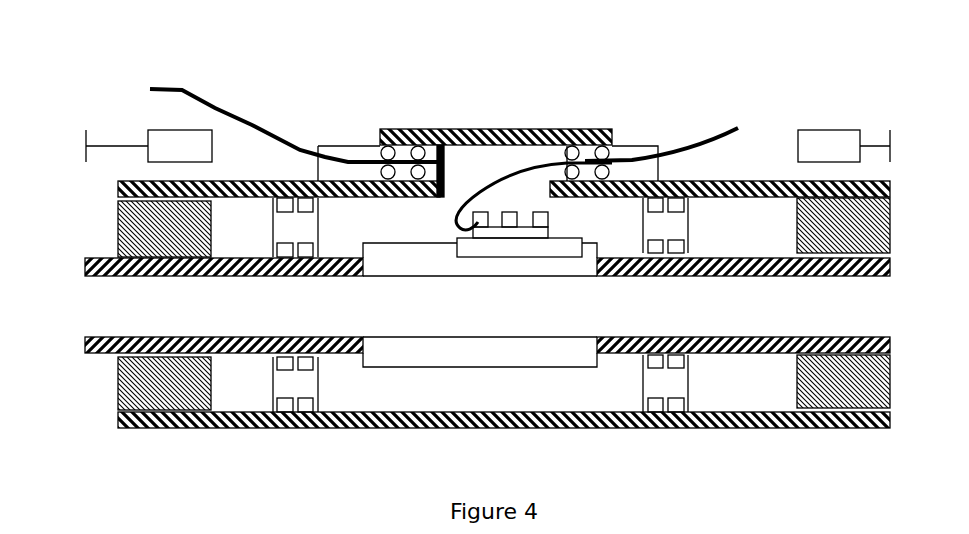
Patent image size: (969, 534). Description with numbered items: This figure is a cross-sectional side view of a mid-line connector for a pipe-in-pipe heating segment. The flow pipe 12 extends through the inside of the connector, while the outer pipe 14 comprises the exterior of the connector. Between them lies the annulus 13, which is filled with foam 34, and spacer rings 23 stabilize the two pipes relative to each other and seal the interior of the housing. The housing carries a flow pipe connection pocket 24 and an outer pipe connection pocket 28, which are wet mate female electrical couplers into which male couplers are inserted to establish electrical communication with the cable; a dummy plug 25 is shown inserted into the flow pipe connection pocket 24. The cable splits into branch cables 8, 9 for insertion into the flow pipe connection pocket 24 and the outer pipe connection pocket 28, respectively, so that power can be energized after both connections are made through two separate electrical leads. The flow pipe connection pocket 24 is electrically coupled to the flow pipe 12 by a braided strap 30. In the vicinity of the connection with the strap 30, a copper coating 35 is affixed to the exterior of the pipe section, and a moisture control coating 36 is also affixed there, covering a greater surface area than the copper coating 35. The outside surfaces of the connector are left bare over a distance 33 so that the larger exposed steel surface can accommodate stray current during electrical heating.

The branch cable 8 is at (725, 119).
The branch cable 9 is at (169, 82).
The flow pipe 12 is at (74, 322).
The annulus 13 is at (763, 395).
The outer pipe 14 is at (104, 431).
The spacer rings 23 is at (283, 222).
The flow pipe connection pocket 24 is at (577, 135).
The dummy plug 25 is at (102, 134).
The outer pipe connection pocket 28 is at (402, 135).
The strap 30 is at (510, 155).
The distance 33 is at (447, 135).
The foam 34 is at (112, 240).
The copper coating 35 is at (518, 262).
The moisture control coating 36 is at (397, 362).